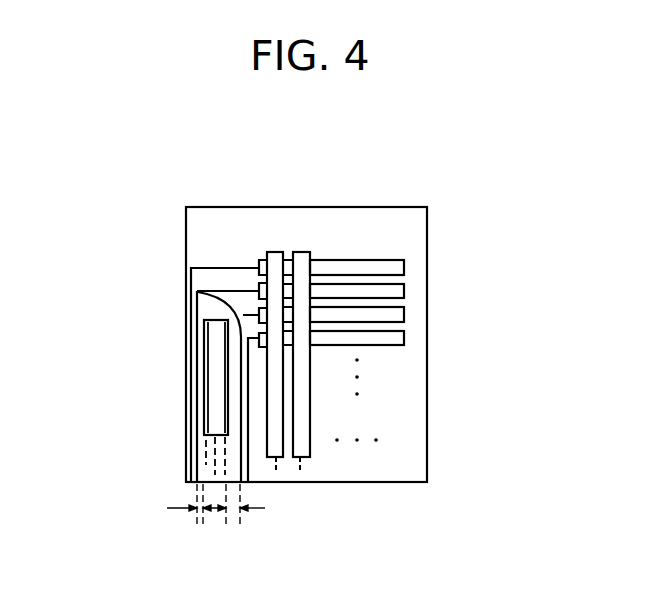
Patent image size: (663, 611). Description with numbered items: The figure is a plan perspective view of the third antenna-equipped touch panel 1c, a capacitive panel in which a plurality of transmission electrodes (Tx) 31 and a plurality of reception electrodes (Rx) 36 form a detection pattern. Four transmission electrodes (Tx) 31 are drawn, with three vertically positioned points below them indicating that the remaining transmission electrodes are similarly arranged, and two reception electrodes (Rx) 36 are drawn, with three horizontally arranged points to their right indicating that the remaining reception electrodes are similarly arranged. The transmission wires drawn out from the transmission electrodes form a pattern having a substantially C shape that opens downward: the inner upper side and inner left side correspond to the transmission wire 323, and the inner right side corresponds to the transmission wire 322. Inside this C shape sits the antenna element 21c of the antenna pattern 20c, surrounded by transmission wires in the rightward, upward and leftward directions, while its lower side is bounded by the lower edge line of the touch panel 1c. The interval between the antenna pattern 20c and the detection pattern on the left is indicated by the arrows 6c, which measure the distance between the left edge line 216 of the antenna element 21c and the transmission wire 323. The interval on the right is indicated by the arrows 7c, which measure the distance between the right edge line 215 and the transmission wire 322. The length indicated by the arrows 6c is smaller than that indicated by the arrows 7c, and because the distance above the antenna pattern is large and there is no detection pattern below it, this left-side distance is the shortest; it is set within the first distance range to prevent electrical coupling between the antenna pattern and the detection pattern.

The third antenna-equipped touch panel 1c is at (340, 190).
The transmission electrodes (Tx) 31 is at (392, 270).
The reception electrodes (Rx) 36 is at (278, 440).
The transmission wire 322 is at (197, 292).
The transmission wire 323 is at (197, 402).
The left edge line 216 is at (204, 367).
The right edge line 215 is at (223, 328).
The antenna element 21c is at (212, 418).
The antenna pattern 20c is at (162, 451).
The arrows 6c is at (202, 528).
The arrows 7c is at (232, 528).